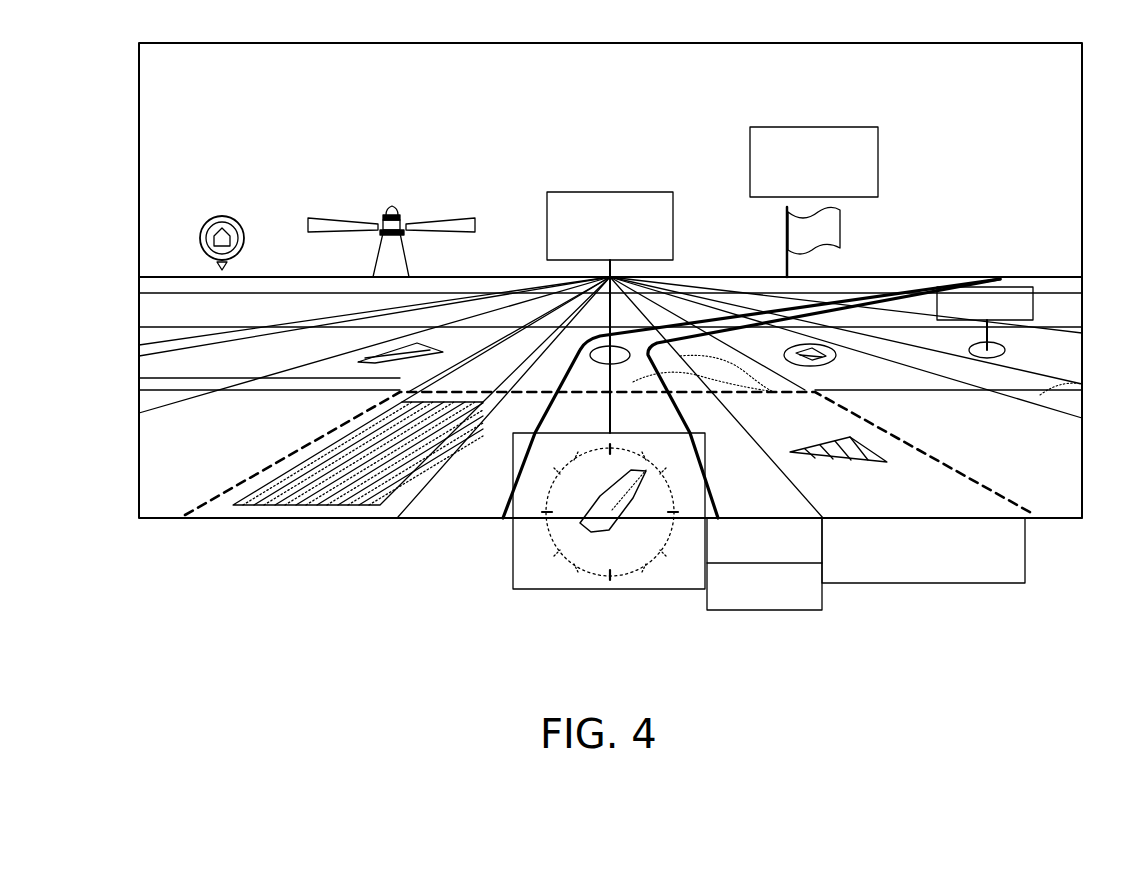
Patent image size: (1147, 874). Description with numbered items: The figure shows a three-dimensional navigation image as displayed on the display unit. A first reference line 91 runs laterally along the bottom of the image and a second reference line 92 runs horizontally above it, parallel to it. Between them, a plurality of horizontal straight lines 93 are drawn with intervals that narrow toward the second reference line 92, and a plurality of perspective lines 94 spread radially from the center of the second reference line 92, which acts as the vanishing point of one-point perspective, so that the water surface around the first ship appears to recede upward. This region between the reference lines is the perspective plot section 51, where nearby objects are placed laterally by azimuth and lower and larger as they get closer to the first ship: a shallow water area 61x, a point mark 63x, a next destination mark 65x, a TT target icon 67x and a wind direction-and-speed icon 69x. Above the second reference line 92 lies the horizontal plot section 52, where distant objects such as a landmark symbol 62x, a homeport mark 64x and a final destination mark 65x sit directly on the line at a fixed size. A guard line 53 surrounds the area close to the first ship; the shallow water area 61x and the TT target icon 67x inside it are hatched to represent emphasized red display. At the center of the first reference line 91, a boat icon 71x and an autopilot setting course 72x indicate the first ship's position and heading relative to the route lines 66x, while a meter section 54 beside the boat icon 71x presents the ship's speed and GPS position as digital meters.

The perspective plot section 51 is at (132, 278).
The horizontal plot section 52 is at (132, 172).
The guard line 53 is at (185, 515).
The meter section 54 is at (840, 600).
The shallow water area 61x is at (205, 400).
The landmark symbol 62x is at (375, 266).
The point mark 63x is at (969, 360).
The homeport mark 64x is at (200, 250).
The next destination mark / final destination mark 65x is at (514, 288).
The route lines 66x is at (720, 290).
The TT target icon 67x is at (372, 365).
The wind direction-and-speed icon 69x is at (835, 365).
The boat icon 71x is at (610, 530).
The setting course 72x is at (646, 470).
The first reference line 91 is at (1060, 519).
The second reference line 92 is at (1018, 276).
The horizontal straight lines 93 is at (1048, 293).
The perspective lines 94 is at (775, 392).